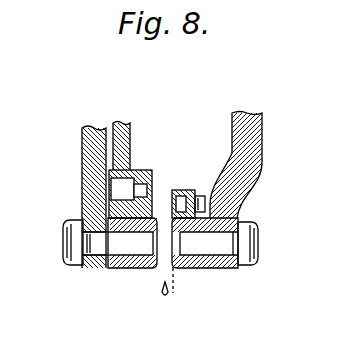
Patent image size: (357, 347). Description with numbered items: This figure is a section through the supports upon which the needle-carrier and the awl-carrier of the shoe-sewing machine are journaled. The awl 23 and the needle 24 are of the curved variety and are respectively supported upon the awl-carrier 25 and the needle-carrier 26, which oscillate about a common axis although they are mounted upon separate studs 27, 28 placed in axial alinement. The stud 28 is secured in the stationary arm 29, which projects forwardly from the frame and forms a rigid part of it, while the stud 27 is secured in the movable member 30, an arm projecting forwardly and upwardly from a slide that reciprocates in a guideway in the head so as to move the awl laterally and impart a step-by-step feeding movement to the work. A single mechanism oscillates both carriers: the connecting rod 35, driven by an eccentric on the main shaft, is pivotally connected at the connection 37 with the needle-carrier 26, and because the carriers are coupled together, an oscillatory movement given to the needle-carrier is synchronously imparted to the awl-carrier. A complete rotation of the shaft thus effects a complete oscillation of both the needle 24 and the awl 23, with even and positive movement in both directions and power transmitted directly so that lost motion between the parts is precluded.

The awl 23 is at (177, 190).
The needle 24 is at (162, 300).
The awl-carrier 25 is at (193, 268).
The needle-carrier 26 is at (125, 268).
The stud 27 is at (218, 242).
The stud 28 is at (88, 272).
The stationary arm 29 is at (92, 178).
The movable member 30 is at (250, 143).
The connecting rod 35 is at (132, 135).
The pivotal connection 37 is at (117, 190).